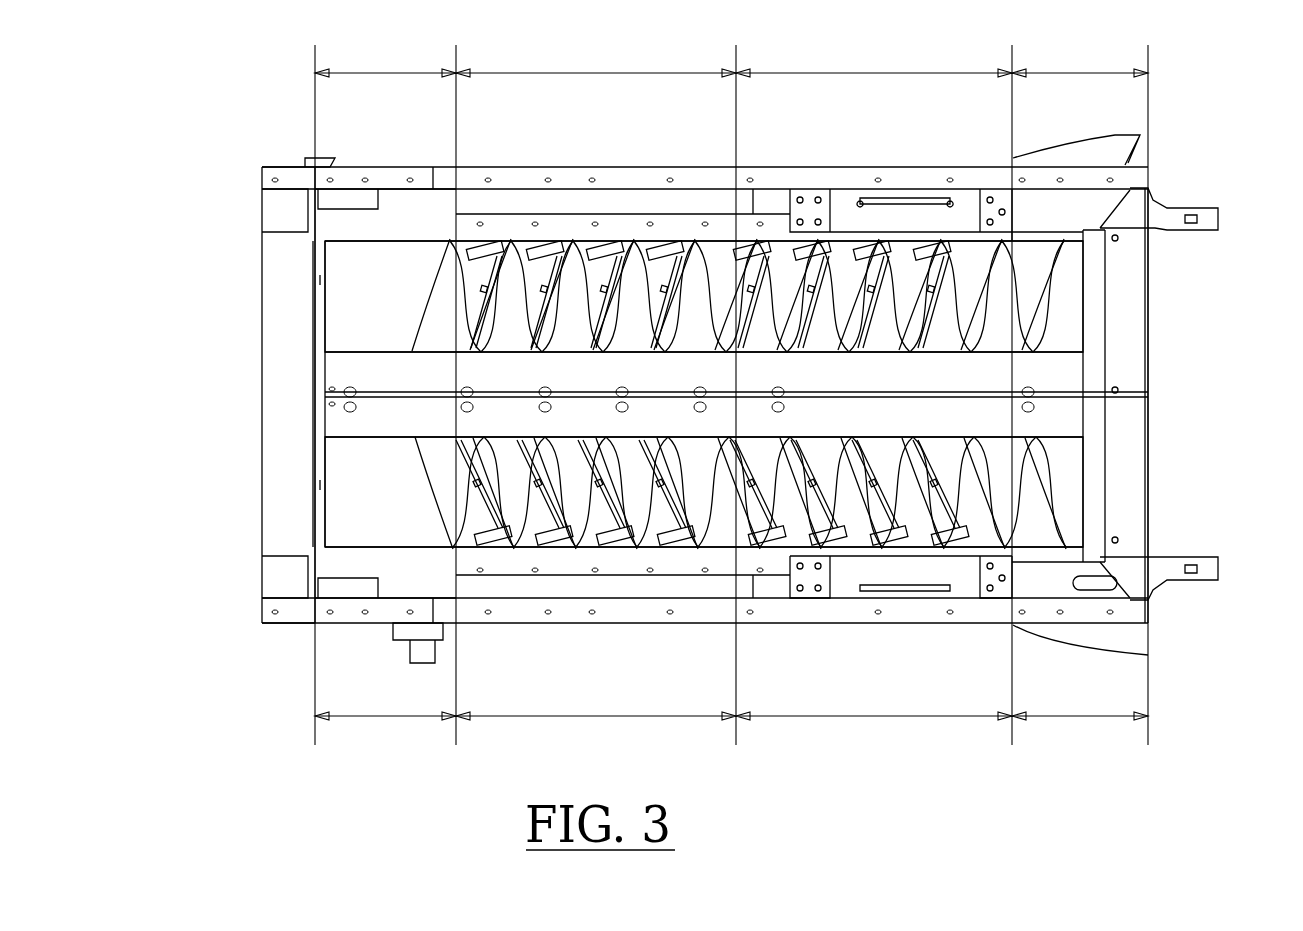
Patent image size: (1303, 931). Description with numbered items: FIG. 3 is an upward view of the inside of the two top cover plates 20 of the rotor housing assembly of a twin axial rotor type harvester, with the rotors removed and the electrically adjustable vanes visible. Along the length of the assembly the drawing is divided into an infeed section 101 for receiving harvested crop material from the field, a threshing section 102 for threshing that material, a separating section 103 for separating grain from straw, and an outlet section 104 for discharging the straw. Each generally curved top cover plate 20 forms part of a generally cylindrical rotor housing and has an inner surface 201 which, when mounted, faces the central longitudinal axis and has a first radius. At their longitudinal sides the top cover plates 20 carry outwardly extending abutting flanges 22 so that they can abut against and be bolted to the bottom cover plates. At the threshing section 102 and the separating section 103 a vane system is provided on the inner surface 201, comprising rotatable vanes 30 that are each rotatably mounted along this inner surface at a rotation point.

The top cover plate 20 is at (1068, 486).
The outwardly extending abutting flange 22 is at (1108, 403).
The rotatable vane 30 is at (666, 246).
The infeed section 101 is at (359, 397).
The threshing section 102 is at (596, 397).
The separating section 103 is at (919, 397).
The outlet section 104 is at (1115, 447).
The inner surface 201 is at (442, 492).